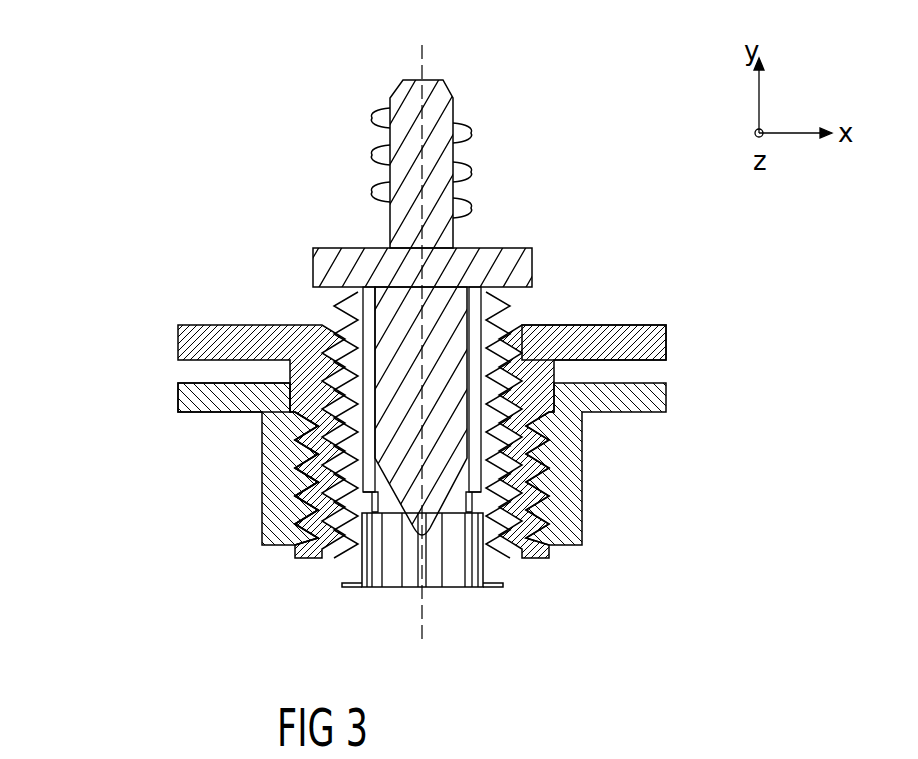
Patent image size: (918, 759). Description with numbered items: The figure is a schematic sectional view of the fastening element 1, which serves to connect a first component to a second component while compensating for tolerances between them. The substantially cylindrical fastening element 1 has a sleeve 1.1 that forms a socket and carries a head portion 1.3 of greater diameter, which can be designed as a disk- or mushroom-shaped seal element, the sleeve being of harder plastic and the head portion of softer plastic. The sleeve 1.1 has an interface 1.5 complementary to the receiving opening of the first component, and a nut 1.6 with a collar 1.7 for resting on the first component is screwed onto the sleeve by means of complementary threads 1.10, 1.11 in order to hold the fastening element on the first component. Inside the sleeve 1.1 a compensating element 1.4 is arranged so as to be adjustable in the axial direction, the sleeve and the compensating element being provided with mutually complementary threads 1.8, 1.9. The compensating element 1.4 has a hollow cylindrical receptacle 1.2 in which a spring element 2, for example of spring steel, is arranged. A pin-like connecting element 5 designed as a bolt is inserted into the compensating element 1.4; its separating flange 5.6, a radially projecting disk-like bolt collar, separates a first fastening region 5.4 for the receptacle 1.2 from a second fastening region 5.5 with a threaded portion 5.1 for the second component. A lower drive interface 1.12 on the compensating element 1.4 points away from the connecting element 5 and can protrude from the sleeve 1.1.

The fastening element 1 is at (226, 88).
The sleeve 1.1 is at (552, 437).
The receptacle 1.2 is at (294, 555).
The head portion 1.3 is at (667, 341).
The compensating element 1.4 is at (350, 518).
The interface 1.5 is at (258, 352).
The nut 1.6 is at (262, 449).
The collar 1.7 is at (178, 393).
The thread 1.8 is at (500, 321).
The thread 1.9 is at (505, 560).
The thread 1.10 is at (266, 518).
The thread 1.11 is at (292, 481).
The lower drive interface 1.12 is at (390, 572).
The spring element 2 is at (334, 346).
The connecting element 5 is at (459, 379).
The threaded portion 5.1 is at (466, 174).
The first fastening region 5.4 is at (540, 500).
The second fastening region 5.5 is at (388, 136).
The separating flange 5.6 is at (320, 263).